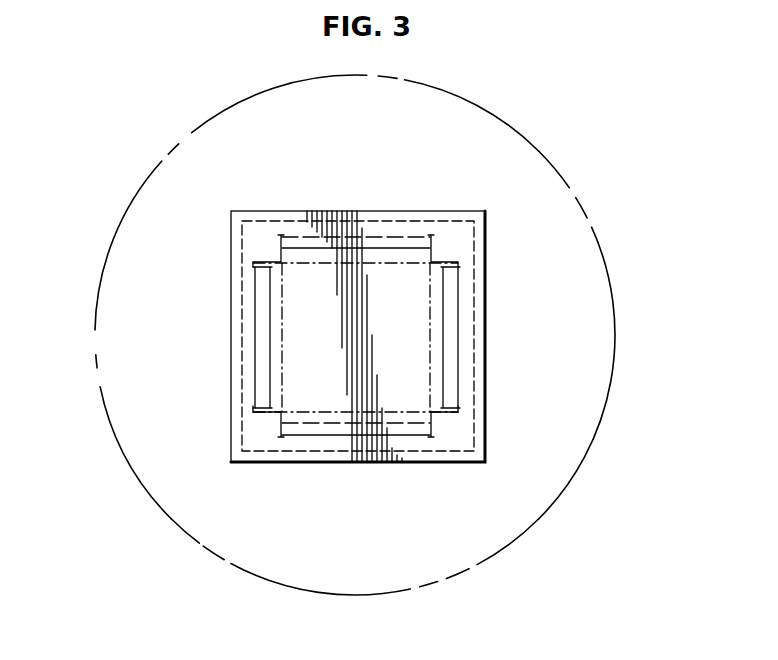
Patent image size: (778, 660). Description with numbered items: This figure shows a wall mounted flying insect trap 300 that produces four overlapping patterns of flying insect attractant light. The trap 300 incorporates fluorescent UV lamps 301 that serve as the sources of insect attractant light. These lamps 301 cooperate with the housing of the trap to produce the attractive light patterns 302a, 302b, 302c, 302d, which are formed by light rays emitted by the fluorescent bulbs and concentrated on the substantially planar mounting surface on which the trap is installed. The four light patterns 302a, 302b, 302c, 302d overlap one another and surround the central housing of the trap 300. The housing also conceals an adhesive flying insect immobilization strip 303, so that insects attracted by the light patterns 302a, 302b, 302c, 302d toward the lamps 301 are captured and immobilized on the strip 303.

The trap 300 is at (395, 211).
The lamps 301 is at (455, 312).
The adhesive flying insect immobilization strip 303 is at (466, 228).
The attractive light pattern 302a is at (580, 368).
The attractive light pattern 302b is at (355, 562).
The attractive light pattern 302c is at (143, 322).
The attractive light pattern 302d is at (323, 103).